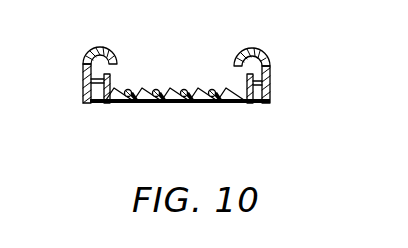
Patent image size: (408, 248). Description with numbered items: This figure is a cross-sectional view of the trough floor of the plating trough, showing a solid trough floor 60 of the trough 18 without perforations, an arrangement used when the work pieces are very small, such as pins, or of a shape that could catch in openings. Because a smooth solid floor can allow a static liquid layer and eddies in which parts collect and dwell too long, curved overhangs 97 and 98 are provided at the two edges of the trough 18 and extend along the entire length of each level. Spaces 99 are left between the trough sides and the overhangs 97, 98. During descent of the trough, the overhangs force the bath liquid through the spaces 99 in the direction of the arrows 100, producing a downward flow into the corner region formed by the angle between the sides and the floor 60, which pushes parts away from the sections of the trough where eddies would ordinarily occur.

The trough 18 is at (215, 103).
The trough floor 60 is at (168, 93).
The curved overhang 97 is at (108, 47).
The curved overhang 98 is at (256, 51).
The spaces 99 is at (84, 67).
The arrows 100 is at (240, 67).